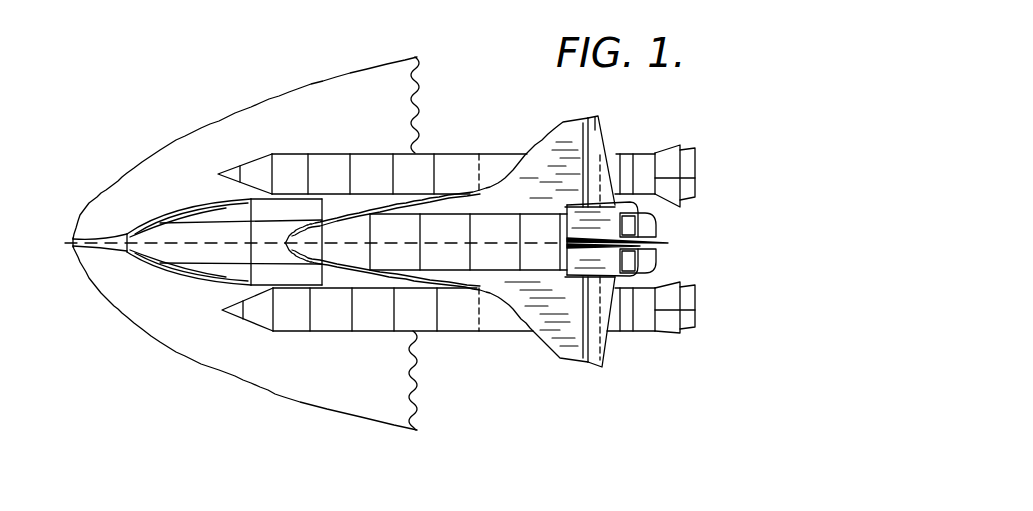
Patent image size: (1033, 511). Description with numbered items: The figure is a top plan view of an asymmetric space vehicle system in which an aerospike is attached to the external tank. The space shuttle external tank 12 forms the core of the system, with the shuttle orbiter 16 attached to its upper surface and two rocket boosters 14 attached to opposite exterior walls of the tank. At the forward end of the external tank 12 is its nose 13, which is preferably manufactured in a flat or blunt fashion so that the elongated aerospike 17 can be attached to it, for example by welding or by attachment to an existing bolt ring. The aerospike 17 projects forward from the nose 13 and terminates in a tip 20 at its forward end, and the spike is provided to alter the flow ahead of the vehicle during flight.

The external tank 12 is at (211, 212).
The nose 13 is at (131, 252).
The rocket boosters 14 is at (296, 163).
The orbiter 16 is at (566, 338).
The aerospike 17 is at (85, 248).
The tip 20 is at (292, 369).